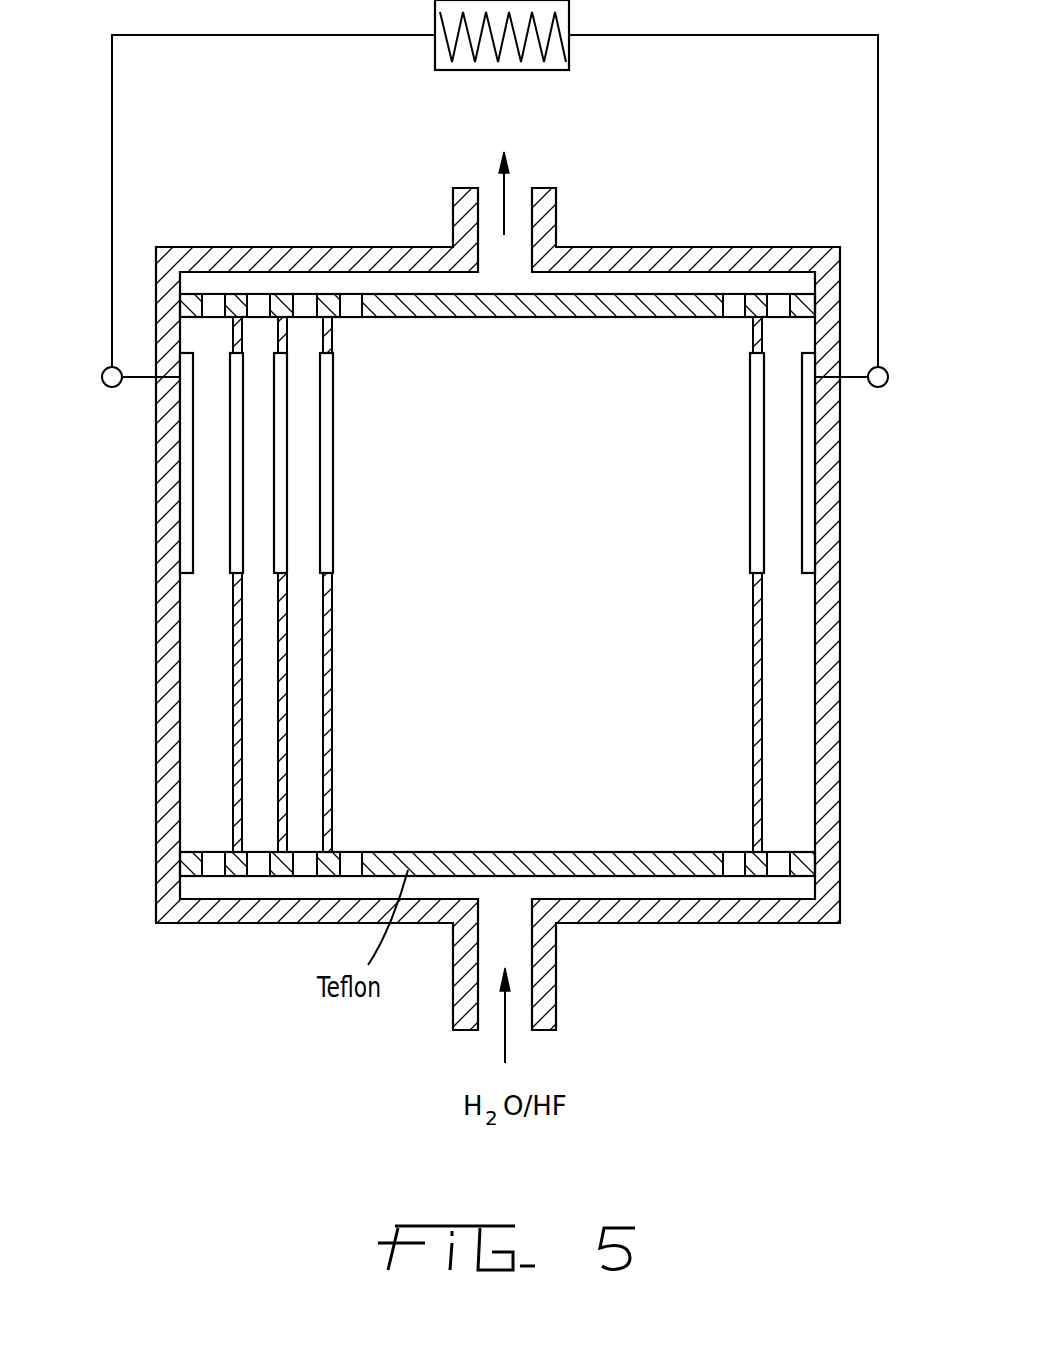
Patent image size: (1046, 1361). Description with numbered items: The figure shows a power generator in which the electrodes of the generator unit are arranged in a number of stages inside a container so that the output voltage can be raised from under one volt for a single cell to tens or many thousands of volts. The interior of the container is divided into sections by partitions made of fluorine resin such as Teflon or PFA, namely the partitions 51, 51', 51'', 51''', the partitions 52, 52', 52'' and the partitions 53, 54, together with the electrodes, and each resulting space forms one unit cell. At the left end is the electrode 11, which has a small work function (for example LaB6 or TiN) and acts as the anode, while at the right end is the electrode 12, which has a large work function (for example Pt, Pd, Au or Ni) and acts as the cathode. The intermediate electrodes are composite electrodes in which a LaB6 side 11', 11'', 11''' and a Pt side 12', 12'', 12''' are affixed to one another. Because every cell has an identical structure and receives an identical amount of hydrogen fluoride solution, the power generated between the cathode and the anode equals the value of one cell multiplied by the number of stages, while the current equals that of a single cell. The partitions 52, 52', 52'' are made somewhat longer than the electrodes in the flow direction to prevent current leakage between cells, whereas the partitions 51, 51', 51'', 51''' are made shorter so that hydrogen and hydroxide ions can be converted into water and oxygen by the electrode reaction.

The electrode having a small work function 11 is at (133, 463).
The LaB6 electrode portion 11' is at (155, 595).
The LaB6 electrode portion 11'' is at (347, 618).
The LaB6 electrode portion 11''' is at (372, 590).
The electrode having a large work function 12 is at (860, 486).
The Pt electrode portion 12' is at (162, 463).
The Pt electrode portion 12'' is at (351, 463).
The Pt electrode portion 12''' is at (542, 463).
The partition 51 is at (241, 270).
The partition 51' is at (291, 264).
The partition 51'' is at (350, 251).
The partition 51''' is at (732, 250).
The partition 52 is at (164, 712).
The partition 52' is at (349, 712).
The partition 52'' is at (372, 712).
The partition 53 is at (608, 300).
The partition 54 is at (618, 877).